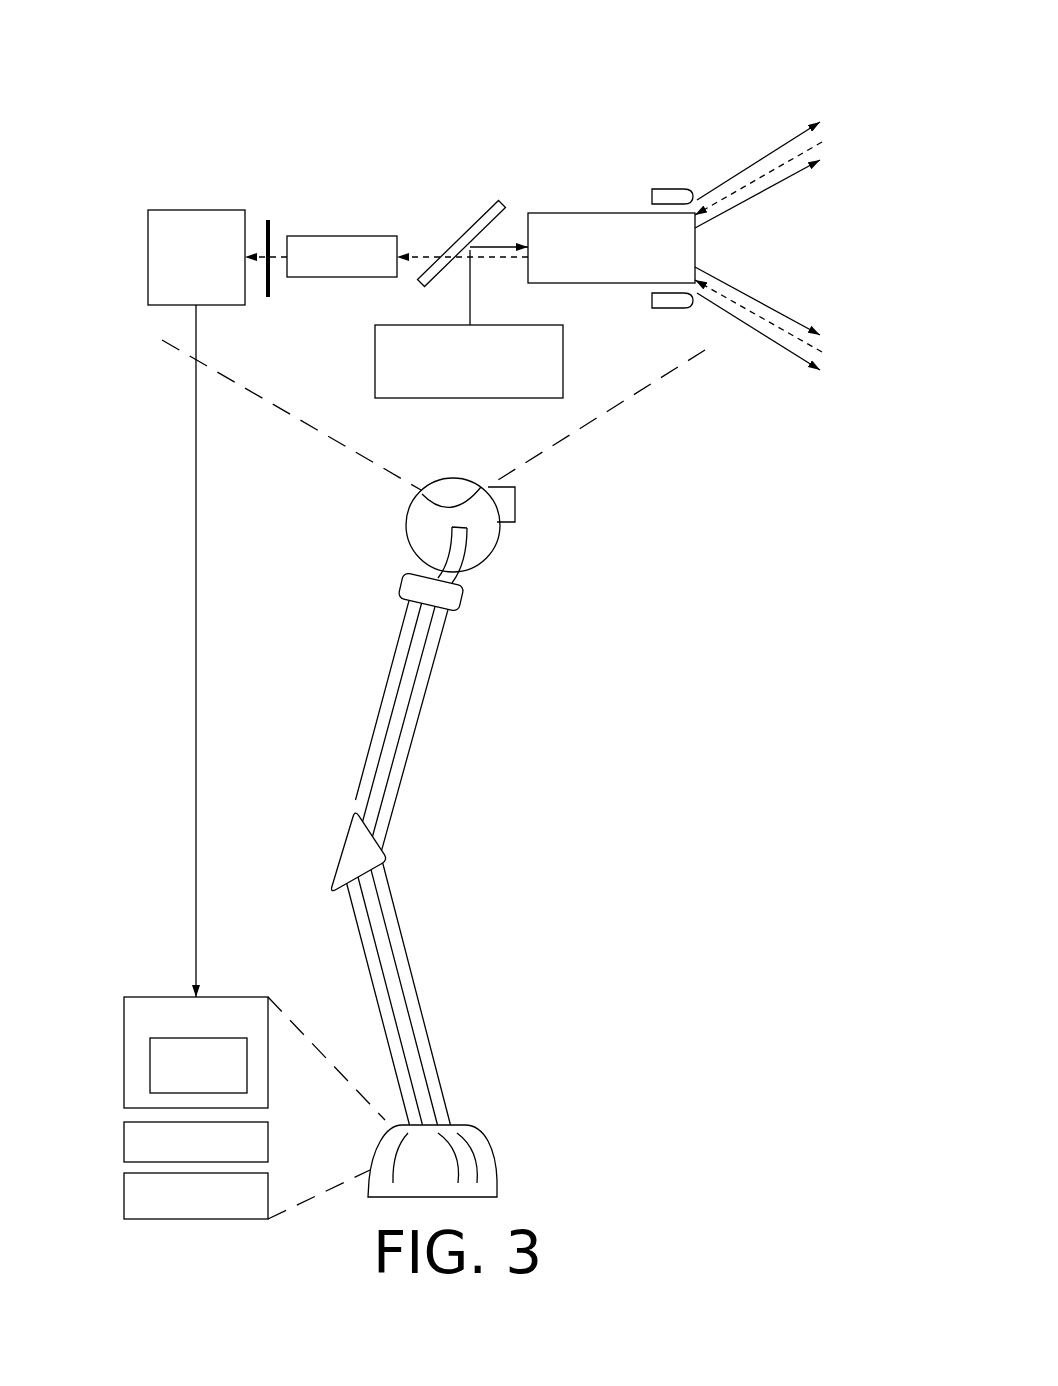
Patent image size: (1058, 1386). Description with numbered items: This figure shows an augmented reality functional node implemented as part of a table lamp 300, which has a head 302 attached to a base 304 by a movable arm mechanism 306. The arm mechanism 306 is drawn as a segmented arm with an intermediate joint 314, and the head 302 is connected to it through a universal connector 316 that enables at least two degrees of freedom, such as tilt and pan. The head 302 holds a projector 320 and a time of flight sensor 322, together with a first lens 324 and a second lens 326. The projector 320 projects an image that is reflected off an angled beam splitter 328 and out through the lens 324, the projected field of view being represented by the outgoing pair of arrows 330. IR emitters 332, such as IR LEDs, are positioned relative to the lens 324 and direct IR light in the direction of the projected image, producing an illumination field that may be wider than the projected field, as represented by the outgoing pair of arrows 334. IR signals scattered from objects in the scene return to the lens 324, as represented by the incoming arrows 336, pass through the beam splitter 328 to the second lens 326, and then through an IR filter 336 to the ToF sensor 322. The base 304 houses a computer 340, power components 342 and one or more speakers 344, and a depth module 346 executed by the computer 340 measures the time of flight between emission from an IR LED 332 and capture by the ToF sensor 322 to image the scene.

The table lamp 300 is at (752, 37).
The head 302 is at (496, 557).
The base 304 is at (498, 1163).
The arm mechanism 306 is at (343, 848).
The joint 314 is at (368, 858).
The universal connector 316 is at (433, 589).
The projector 320 is at (469, 324).
The time of flight (ToF) sensor 322 is at (196, 257).
The first lens 324 is at (611, 248).
The second lens 326 is at (342, 256).
The beam splitter 328 is at (490, 212).
The outgoing pair of arrows 330 is at (564, 249).
The IR emitters 332 is at (662, 355).
The outgoing pair of arrows 334 is at (772, 150).
The IR filter 336 is at (746, 186).
The computer 340 is at (163, 1052).
The power components 342 is at (124, 1142).
The speakers 344 is at (124, 1191).
The depth module 346 is at (150, 1064).